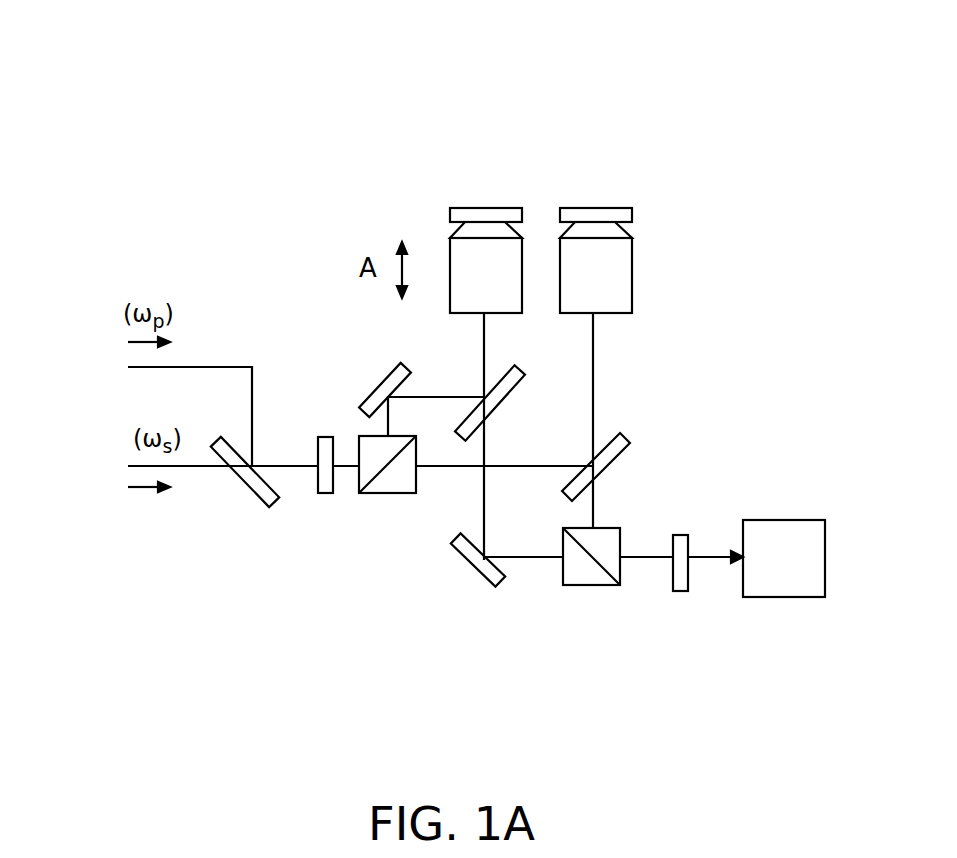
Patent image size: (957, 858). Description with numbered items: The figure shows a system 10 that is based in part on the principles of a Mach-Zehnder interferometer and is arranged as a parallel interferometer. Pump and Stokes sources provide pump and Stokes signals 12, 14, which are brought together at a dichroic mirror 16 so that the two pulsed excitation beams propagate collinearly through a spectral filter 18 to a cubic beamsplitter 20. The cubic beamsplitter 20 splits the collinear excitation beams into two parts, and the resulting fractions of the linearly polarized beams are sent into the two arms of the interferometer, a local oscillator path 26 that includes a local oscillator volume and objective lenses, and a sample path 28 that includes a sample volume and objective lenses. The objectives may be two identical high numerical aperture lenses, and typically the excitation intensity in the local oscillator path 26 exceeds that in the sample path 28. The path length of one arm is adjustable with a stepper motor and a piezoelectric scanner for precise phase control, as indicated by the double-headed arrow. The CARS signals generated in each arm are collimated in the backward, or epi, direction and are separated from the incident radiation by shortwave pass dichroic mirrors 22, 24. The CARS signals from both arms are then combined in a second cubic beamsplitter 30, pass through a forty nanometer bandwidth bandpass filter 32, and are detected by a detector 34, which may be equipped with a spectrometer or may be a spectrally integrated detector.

The system 10 is at (846, 80).
The pump signal 12 is at (145, 368).
The Stokes signal 14 is at (133, 467).
The dichroic mirror 16 is at (255, 495).
The spectral filter 18 is at (326, 436).
The cubic beamsplitter 20 is at (389, 494).
The shortwave pass dichroic mirror 22 is at (507, 400).
The shortwave pass dichroic mirror 24 is at (615, 462).
The local oscillator path 26 is at (486, 207).
The sample path 28 is at (596, 207).
The cubic beamsplitter 30 is at (592, 586).
The bandpass filter 32 is at (682, 592).
The detector 34 is at (790, 520).